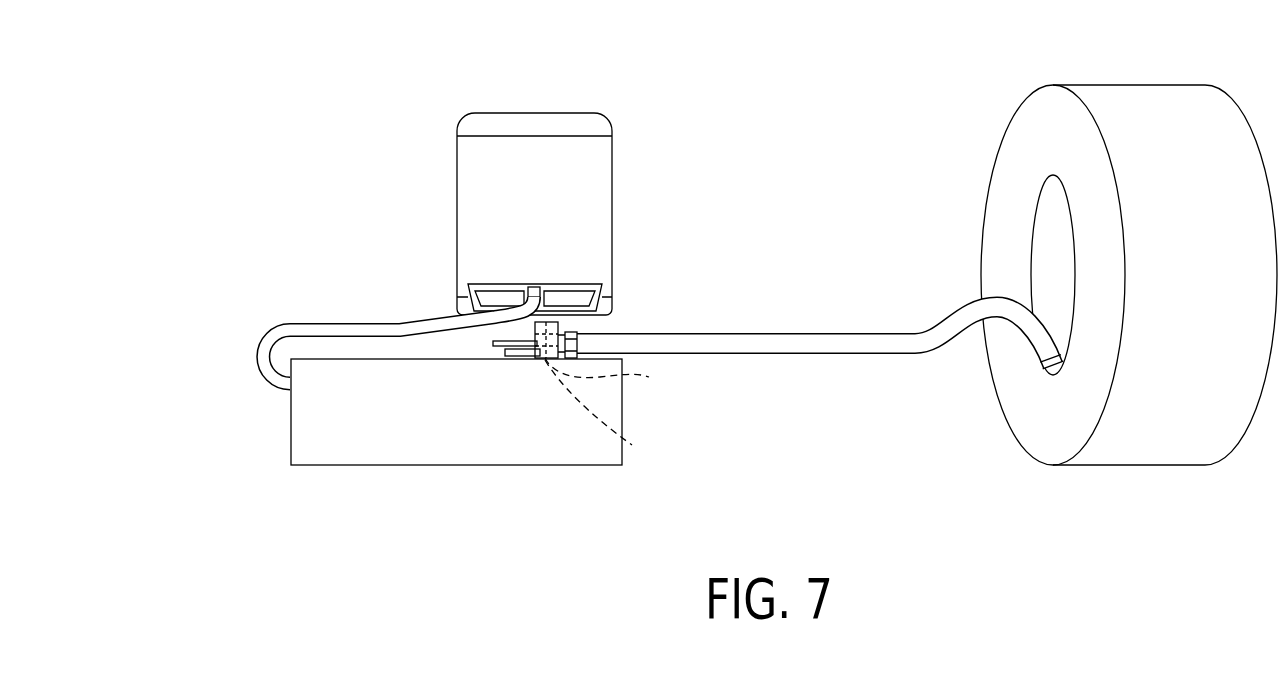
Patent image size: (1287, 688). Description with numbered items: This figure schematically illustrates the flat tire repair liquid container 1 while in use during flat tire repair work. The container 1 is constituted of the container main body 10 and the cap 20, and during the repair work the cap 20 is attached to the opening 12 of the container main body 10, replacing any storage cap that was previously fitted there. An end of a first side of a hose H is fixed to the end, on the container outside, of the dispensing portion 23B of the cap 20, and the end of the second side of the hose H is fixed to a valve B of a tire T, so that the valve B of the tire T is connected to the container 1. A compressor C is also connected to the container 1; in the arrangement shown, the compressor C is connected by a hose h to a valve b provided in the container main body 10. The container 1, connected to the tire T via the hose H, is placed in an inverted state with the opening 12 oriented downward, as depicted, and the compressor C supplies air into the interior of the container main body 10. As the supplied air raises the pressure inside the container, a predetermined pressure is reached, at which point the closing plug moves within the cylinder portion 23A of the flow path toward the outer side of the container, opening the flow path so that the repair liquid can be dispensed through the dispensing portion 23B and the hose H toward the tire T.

The flat tire repair liquid container 1 is at (627, 119).
The container main body 10 is at (621, 177).
The opening 12 is at (547, 322).
The cap 20 is at (576, 334).
The cylinder portion 23A is at (616, 416).
The dispensing portion 23B is at (624, 379).
The valve b is at (529, 288).
The hose h is at (311, 326).
The hose H is at (803, 340).
The compressor C is at (450, 453).
The tire T is at (1140, 90).
The valve B is at (1042, 357).